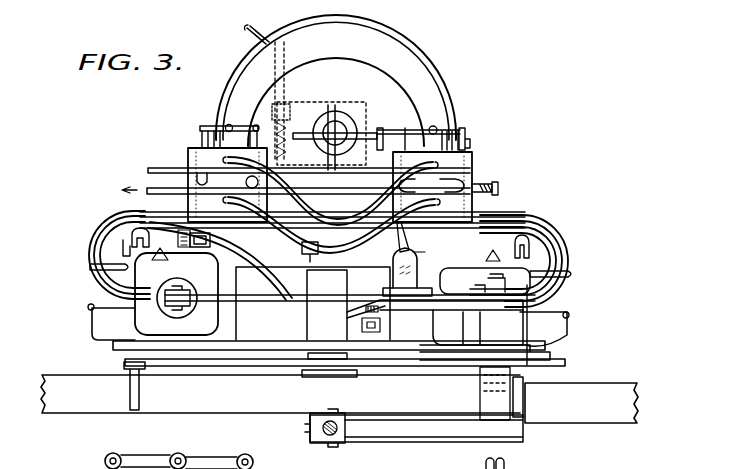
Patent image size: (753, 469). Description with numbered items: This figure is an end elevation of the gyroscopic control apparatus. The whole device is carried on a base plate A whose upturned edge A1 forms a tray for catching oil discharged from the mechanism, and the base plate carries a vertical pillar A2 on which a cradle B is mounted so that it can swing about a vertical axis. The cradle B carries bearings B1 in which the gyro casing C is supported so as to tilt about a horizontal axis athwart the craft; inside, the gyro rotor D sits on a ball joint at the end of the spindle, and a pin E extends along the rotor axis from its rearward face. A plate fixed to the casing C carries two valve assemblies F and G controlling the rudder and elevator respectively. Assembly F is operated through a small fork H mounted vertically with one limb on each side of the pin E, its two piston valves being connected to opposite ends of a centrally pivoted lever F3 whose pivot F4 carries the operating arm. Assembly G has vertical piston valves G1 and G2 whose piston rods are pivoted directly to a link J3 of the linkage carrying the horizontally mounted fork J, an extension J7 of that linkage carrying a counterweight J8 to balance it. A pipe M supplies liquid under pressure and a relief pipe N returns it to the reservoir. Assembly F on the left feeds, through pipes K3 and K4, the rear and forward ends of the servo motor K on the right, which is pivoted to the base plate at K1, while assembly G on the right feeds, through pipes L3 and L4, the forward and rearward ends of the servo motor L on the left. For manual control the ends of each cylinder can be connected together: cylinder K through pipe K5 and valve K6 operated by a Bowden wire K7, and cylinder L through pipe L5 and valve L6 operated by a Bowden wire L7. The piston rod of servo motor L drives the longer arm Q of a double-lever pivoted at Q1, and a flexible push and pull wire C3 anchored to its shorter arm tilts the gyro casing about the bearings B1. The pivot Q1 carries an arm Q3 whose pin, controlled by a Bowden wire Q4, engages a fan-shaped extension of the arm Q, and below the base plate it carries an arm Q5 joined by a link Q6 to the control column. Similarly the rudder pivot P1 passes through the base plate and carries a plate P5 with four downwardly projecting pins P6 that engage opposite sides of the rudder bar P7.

The gyro rotor D is at (383, 58).
The gyro casing C is at (417, 72).
The fork J is at (298, 140).
The small fork H is at (322, 128).
The pin E is at (339, 128).
The vertical piston valve G1 is at (403, 141).
The link J3 is at (449, 126).
The bearings B1 is at (200, 133).
The vertical piston valve G2 is at (470, 146).
The valve assembly G is at (474, 157).
The centrally pivoted lever F3 is at (214, 126).
The pivot F4 is at (181, 454).
The valve assembly F is at (203, 150).
The pipe M is at (150, 168).
The relief pipe N is at (140, 171).
The pipe L5 is at (130, 212).
The pipe L4 is at (127, 213).
The pipe L3 is at (103, 247).
The valve L6 is at (132, 235).
The Bowden wire L7 is at (90, 267).
The push and pull wire C3 is at (196, 250).
The longer arm of double-lever Q is at (264, 300).
The pipe K4 is at (208, 299).
The servo motor L is at (147, 322).
The vertical pillar A2 is at (318, 337).
The plate P5 is at (125, 361).
The pivot P1 is at (330, 362).
The rudder bar P7 is at (593, 413).
The downwardly projecting pins P6 is at (134, 390).
The arm Q5 is at (412, 436).
The link Q6 is at (310, 427).
The Bowden wire Q4 is at (396, 245).
The cradle B is at (425, 252).
The arm Q3 is at (458, 296).
The pivot K1 is at (477, 284).
The servo motor K is at (520, 327).
The upturned edge A1 is at (570, 323).
The base plate A is at (550, 353).
The pivot Q1 is at (562, 278).
The pipe K3 is at (191, 153).
The pipe K5 is at (551, 229).
The valve K6 is at (560, 234).
The Bowden wire K7 is at (567, 267).
The extension J7 is at (494, 184).
The counterweight J8 is at (499, 195).